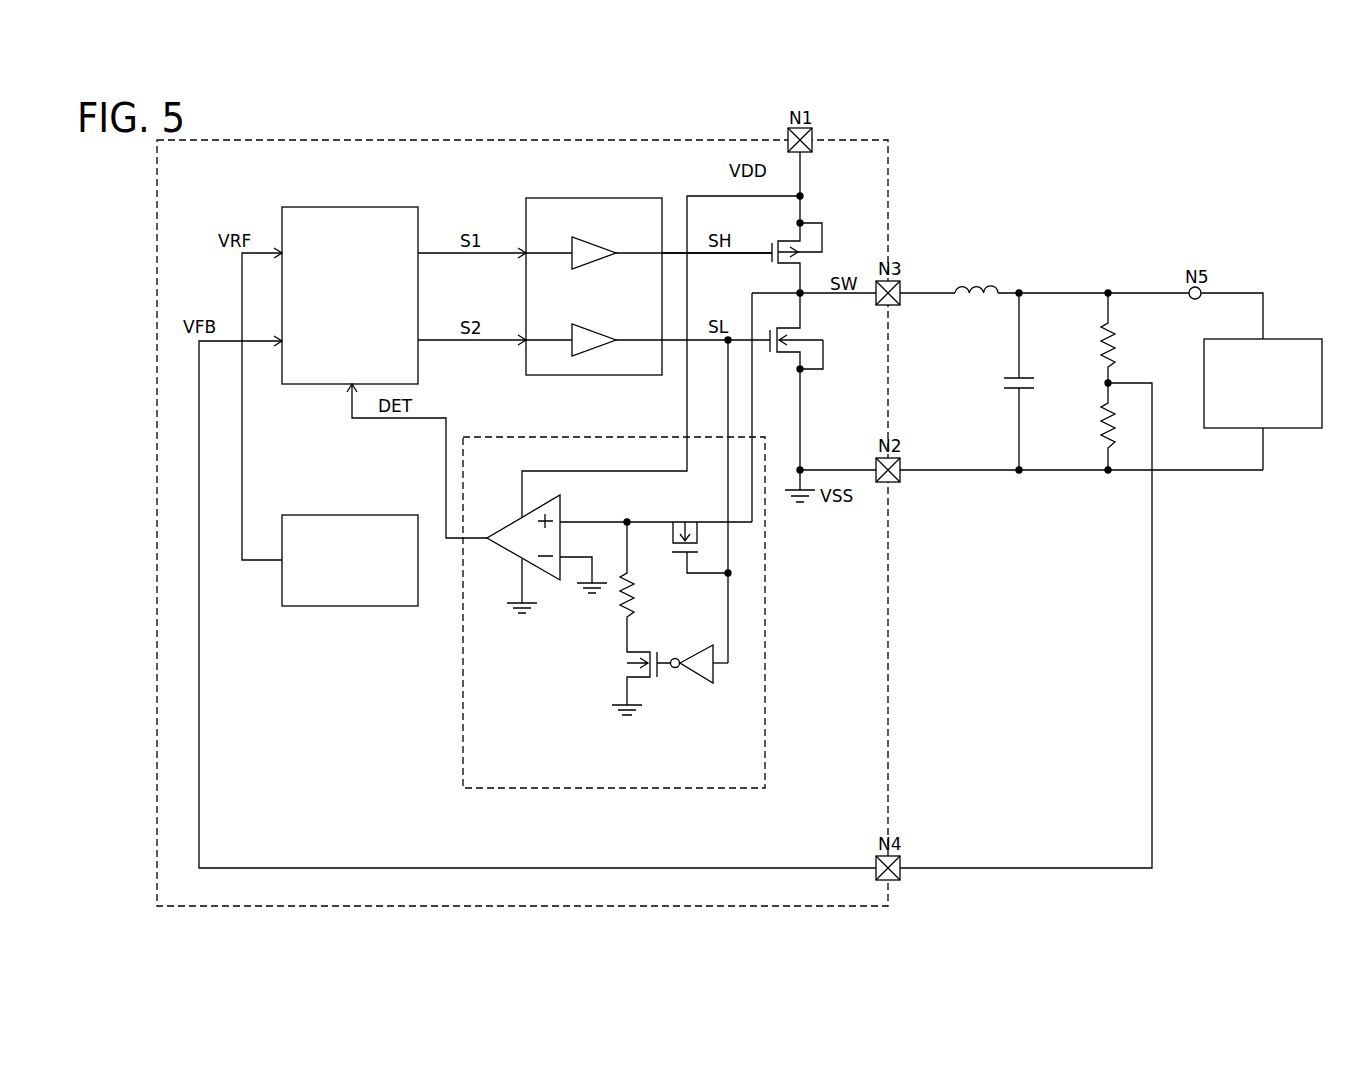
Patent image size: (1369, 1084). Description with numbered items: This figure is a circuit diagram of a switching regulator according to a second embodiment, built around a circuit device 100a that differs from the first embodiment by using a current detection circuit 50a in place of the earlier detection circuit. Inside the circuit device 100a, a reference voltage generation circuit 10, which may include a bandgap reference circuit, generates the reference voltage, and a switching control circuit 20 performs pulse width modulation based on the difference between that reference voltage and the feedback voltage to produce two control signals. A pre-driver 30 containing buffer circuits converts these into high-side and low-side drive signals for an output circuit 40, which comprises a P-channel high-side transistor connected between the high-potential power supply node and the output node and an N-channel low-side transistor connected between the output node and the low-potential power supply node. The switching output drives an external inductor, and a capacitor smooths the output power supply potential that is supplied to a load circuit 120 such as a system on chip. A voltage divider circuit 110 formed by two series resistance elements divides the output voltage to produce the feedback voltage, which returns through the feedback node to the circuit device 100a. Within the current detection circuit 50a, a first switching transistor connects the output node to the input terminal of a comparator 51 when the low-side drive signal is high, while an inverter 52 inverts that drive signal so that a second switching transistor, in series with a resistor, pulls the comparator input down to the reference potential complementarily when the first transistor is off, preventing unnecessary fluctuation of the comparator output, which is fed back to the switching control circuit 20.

The circuit device 100a is at (255, 140).
The reference voltage generation circuit 10 is at (374, 515).
The switching control circuit 20 is at (366, 207).
The pre-driver 30 is at (622, 198).
The output circuit 40 is at (819, 205).
The current detection circuit 50a is at (627, 788).
The comparator 51 is at (508, 518).
The inverter 52 is at (700, 651).
The voltage divider circuit 110 is at (1108, 272).
The load circuit 120 is at (1283, 339).